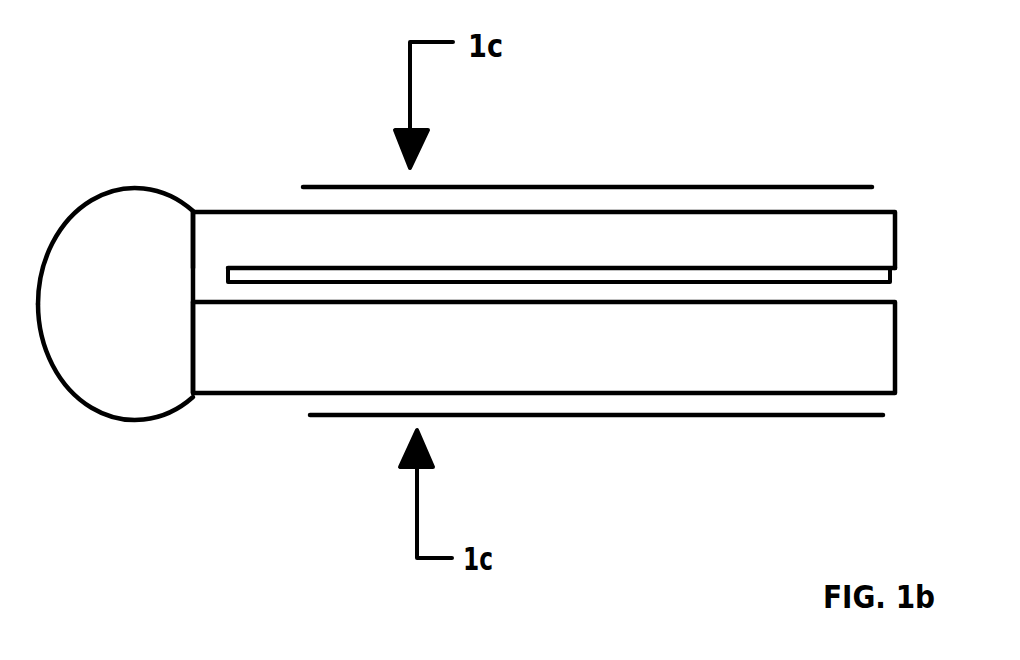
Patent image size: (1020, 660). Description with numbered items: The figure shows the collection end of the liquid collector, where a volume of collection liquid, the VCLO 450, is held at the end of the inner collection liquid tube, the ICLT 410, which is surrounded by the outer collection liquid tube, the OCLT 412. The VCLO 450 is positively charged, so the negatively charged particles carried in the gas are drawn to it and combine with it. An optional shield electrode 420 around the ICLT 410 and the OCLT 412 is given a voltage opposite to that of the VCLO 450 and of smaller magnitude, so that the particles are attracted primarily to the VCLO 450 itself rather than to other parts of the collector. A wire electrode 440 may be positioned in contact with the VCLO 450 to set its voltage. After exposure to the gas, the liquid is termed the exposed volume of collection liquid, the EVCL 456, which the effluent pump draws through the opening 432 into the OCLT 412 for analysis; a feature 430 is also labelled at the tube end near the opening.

The ICLT 410 is at (688, 233).
The OCLT 412 is at (580, 348).
The shield electrode 420 is at (807, 185).
The upper contact edge 430 is at (200, 240).
The opening 432 is at (193, 350).
The wire electrode 440 is at (602, 277).
The VCLO 450 is at (90, 275).
The EVCL 456 is at (87, 380).